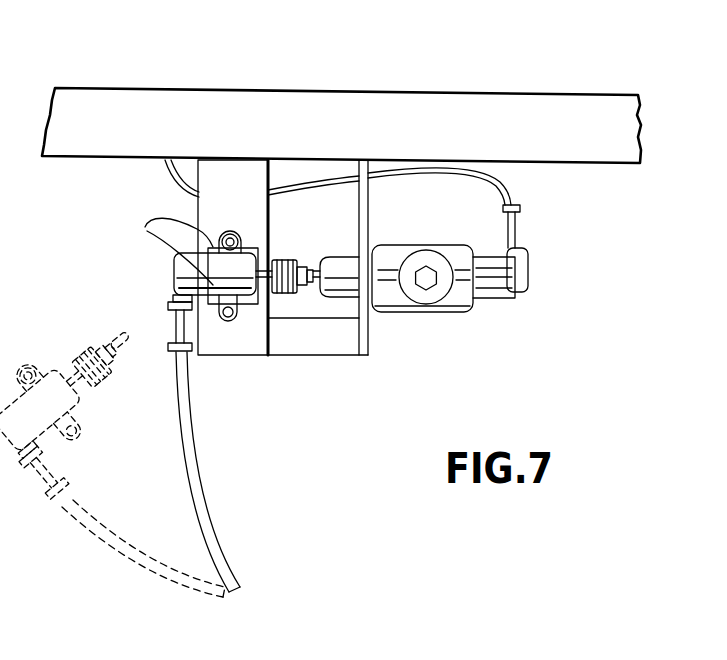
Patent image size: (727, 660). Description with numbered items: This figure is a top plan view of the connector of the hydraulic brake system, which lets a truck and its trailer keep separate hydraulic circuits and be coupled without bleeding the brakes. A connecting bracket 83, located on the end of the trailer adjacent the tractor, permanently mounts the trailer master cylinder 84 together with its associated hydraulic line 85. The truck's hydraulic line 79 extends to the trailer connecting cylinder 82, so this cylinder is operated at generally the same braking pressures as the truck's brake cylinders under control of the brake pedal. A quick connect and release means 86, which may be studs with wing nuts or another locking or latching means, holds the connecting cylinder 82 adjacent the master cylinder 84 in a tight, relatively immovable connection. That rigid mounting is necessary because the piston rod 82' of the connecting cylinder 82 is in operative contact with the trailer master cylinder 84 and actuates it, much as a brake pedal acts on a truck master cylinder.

The hydraulic line 79 is at (195, 471).
The trailer connecting cylinder 82 is at (136, 365).
The piston rod 82' is at (217, 296).
The hydraulic system's connecting bracket 83 is at (363, 160).
The trailer master cylinder 84 is at (387, 313).
The hydraulic line 85 is at (517, 203).
The quick connect and release means 86 is at (166, 249).